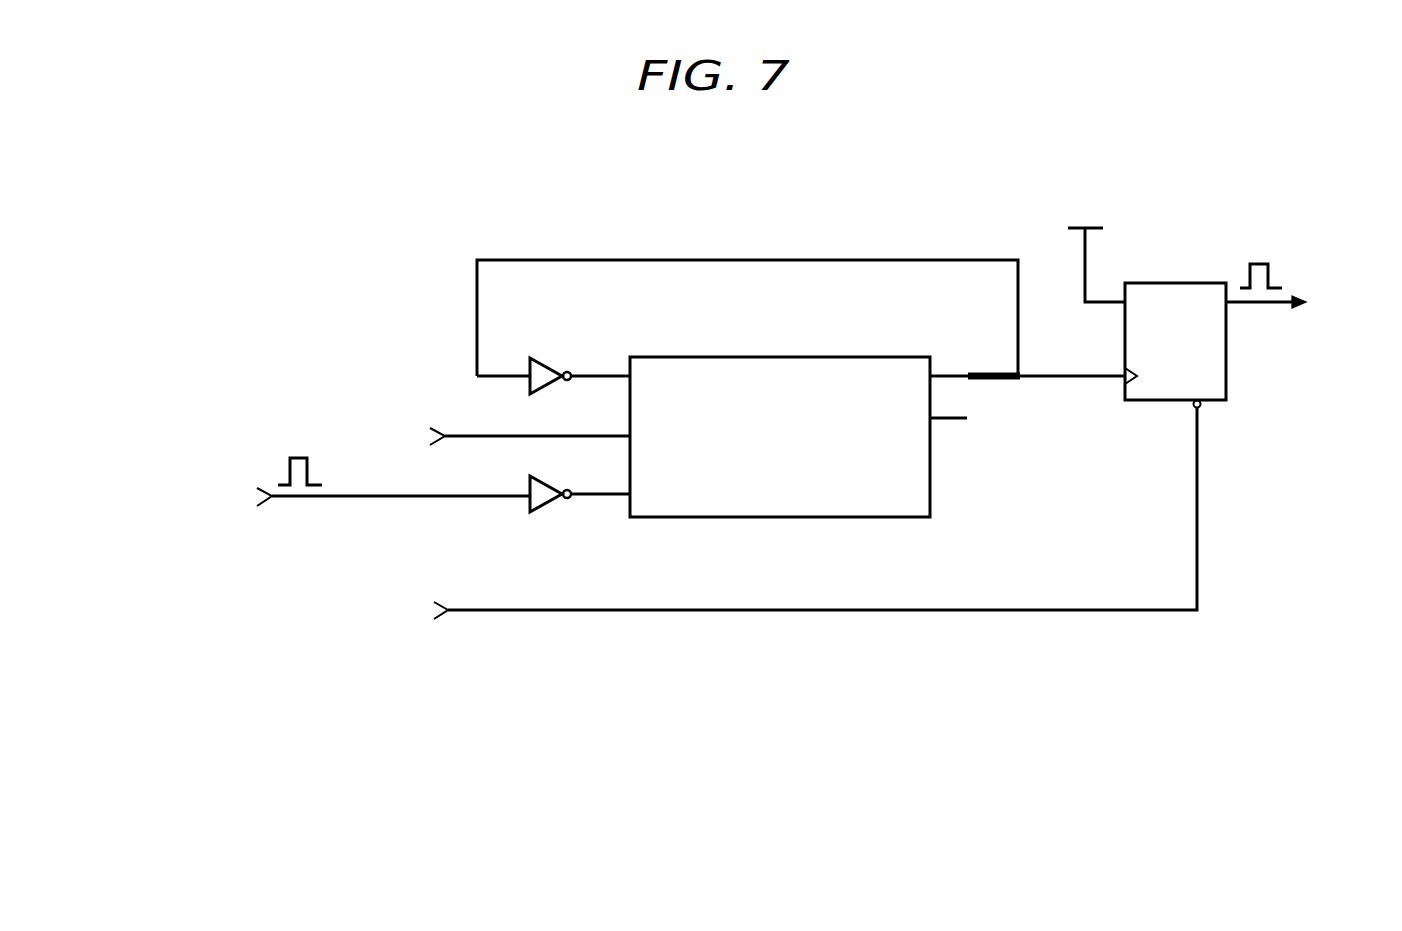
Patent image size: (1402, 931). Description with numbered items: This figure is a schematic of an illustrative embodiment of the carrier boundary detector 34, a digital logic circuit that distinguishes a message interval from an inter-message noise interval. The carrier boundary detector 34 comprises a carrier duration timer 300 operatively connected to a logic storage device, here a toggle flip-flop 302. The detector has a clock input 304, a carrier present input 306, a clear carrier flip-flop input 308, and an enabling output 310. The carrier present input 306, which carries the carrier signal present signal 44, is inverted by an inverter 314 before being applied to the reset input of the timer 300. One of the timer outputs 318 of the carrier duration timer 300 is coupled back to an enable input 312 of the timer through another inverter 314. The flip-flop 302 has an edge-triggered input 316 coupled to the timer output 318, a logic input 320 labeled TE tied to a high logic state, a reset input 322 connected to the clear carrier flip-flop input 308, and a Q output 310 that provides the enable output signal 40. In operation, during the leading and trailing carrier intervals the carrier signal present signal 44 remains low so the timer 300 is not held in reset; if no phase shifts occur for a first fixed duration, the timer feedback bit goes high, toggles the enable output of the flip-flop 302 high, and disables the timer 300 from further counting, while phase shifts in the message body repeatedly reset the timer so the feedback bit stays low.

The carrier boundary detector 34 is at (724, 135).
The carrier duration timer 300 is at (754, 356).
The flip-flop 302 is at (1192, 282).
The clock input 304 is at (460, 432).
The carrier present input 306 is at (310, 500).
The clear carrier flip-flop input 308 is at (476, 614).
The enabling output 310 is at (1265, 306).
The enable input 312 is at (614, 375).
The inverter 314 is at (548, 358).
The edge-triggered input 316 is at (1078, 374).
The timer output 318 is at (1000, 381).
The logic input 320 is at (1088, 255).
The reset input 322 is at (1203, 410).
The enable output signal 40 is at (1256, 262).
The carrier signal present signal 44 is at (292, 455).